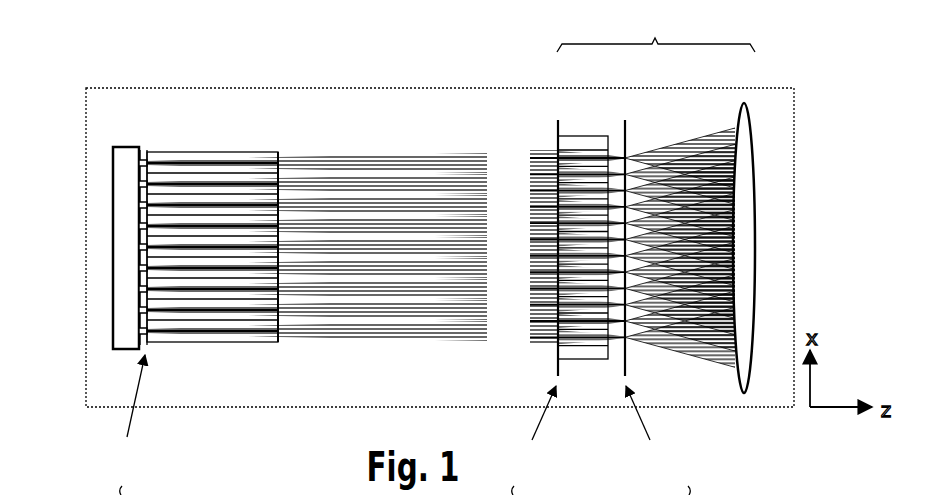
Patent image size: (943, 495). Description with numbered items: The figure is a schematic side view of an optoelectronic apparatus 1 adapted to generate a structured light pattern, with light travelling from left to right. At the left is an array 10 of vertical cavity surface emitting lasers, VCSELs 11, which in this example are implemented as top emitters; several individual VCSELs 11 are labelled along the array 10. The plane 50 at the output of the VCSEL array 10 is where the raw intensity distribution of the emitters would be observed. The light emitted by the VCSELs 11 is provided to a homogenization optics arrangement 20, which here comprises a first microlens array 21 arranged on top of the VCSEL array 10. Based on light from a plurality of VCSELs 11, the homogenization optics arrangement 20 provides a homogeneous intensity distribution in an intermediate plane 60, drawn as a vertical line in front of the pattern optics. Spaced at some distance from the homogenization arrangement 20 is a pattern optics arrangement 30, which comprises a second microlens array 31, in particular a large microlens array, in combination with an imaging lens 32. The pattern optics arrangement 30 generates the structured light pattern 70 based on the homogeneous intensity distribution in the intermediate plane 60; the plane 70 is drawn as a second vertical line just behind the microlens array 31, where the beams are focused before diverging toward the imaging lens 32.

The optoelectronic apparatus 1 is at (386, 88).
The VCSEL array 10 is at (125, 147).
The VCSELs 11 is at (140, 161).
The homogenization optics arrangement 20 is at (210, 152).
The first microlens array 21 is at (265, 151).
The pattern optics arrangement 30 is at (665, 224).
The second microlens array 31 is at (580, 136).
The imaging lens 32 is at (750, 115).
The plane at the output of the VCSEL array 50 is at (147, 350).
The intermediate plane 60 is at (557, 366).
The structured light pattern plane 70 is at (626, 366).